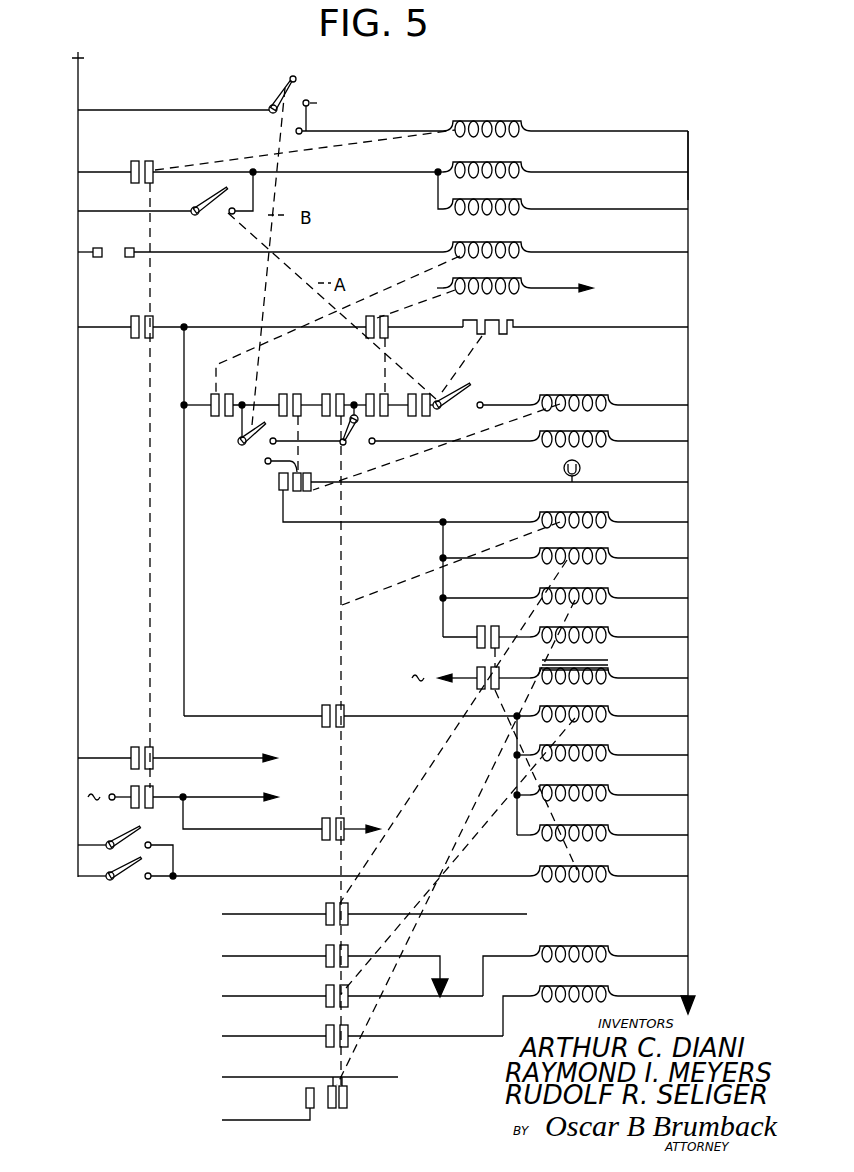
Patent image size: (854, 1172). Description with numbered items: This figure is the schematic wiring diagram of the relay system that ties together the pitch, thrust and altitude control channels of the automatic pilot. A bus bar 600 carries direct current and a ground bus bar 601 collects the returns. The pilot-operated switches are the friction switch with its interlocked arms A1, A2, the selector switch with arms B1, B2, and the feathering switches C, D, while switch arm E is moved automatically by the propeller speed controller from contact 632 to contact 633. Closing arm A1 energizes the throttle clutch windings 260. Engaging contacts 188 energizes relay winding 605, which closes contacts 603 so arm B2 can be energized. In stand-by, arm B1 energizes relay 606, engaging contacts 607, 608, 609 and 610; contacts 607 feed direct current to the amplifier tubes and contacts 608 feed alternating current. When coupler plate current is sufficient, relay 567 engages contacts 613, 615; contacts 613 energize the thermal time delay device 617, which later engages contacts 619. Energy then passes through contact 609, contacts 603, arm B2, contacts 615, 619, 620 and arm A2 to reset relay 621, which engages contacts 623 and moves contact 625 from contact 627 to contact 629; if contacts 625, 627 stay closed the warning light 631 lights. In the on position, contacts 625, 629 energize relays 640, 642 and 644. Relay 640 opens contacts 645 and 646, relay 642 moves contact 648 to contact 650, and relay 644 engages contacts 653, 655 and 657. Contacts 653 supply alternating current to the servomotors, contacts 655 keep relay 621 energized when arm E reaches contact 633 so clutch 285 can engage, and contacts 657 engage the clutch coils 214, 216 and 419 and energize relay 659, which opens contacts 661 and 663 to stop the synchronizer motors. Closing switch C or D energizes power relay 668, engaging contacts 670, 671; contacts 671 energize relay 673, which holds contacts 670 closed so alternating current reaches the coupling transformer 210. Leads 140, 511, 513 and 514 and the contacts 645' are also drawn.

The bus bar 600 is at (78, 100).
The ground bus bar 601 is at (690, 142).
The relay 606 is at (500, 124).
The contacts 610 is at (154, 162).
The windings of throttle clutches 260 is at (493, 200).
The relay winding 605 is at (493, 243).
The contacts of servo switch 188 is at (98, 258).
The alarm relay 567 is at (520, 281).
The contacts 613 is at (375, 319).
The thermal time delay device 617 is at (512, 320).
The contact 609 is at (136, 339).
The contacts 623 is at (293, 395).
The contacts 655 is at (334, 394).
The contacts 615 is at (387, 383).
The reset relay 621 is at (588, 397).
The contacts 603 is at (217, 418).
The contacts 620 is at (266, 425).
The contact 633 is at (376, 441).
The contacts 619 is at (420, 414).
The magnetic clutch 285 is at (600, 433).
The contact 627 is at (313, 458).
The contact 632 is at (347, 444).
The warning light 631 is at (587, 466).
The contact 629 is at (278, 487).
The contact 625 is at (300, 491).
The relay 644 is at (600, 516).
The relay 640 is at (600, 552).
The relay 642 is at (600, 592).
The contacts 671 is at (490, 624).
The relay 673 is at (600, 632).
The coupling transformer 210 is at (604, 652).
The contacts 670 is at (483, 666).
The contacts 657 is at (327, 702).
The relay 659 is at (594, 706).
The contacts 607 is at (140, 746).
The clutch coil 419 is at (594, 745).
The contacts 608 is at (140, 785).
The coil of magnetic clutch 216 is at (592, 788).
The coil of magnetic clutch 214 is at (592, 828).
The contacts 653 is at (281, 830).
The power relay 668 is at (592, 868).
The conductor 140 is at (474, 913).
The contacts 645 is at (321, 900).
The contacts 646 is at (328, 946).
The contacts 661 is at (328, 988).
The contacts 663 is at (328, 1026).
The conductor 514 is at (298, 1076).
The conductor 511 is at (370, 1077).
The conductor 513 is at (250, 1120).
The contact 650 is at (306, 1098).
The relay contacts 645' is at (365, 1092).
The contact 648 is at (332, 1109).
The friction switch arm A1 is at (214, 202).
The friction switch arm A2 is at (460, 386).
The selector switch arm B1 is at (282, 94).
The selector switch arm B2 is at (266, 463).
The propeller feathering switch C is at (123, 832).
The propeller feathering switch D is at (125, 873).
The switch arm E is at (356, 424).